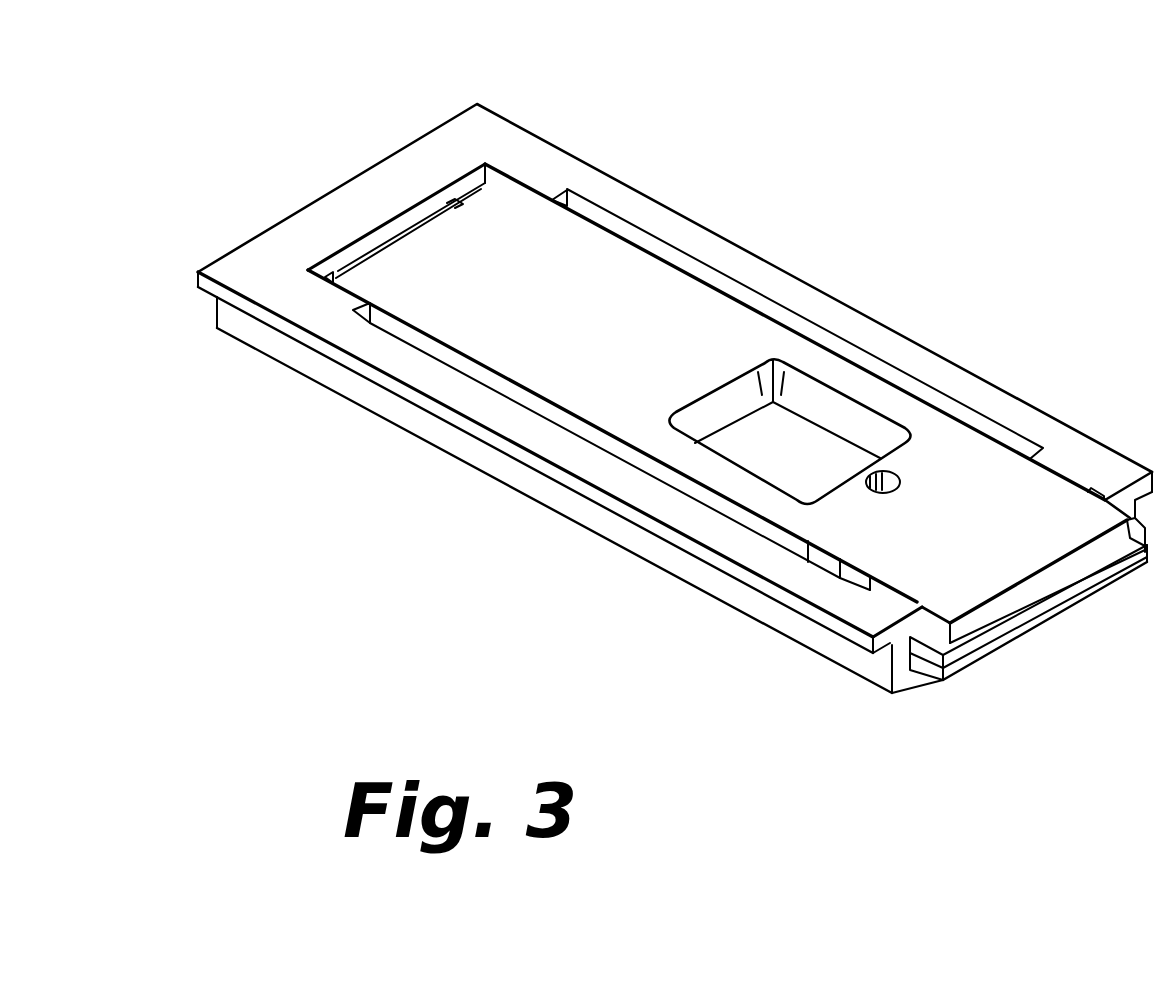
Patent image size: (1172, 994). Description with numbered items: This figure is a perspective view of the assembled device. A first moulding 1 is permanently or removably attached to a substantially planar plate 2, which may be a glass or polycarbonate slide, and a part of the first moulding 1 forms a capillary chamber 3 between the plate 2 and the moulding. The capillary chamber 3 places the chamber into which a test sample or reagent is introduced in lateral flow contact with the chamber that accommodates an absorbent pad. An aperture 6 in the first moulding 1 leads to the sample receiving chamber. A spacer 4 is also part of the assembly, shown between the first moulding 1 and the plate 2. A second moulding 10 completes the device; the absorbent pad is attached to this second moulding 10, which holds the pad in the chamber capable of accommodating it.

The second moulding 10 is at (495, 130).
The first moulding 1 is at (970, 460).
The capillary chamber 3 is at (822, 408).
The aperture 6 is at (890, 486).
The spacer 4 is at (998, 635).
The plate 2 is at (1072, 597).